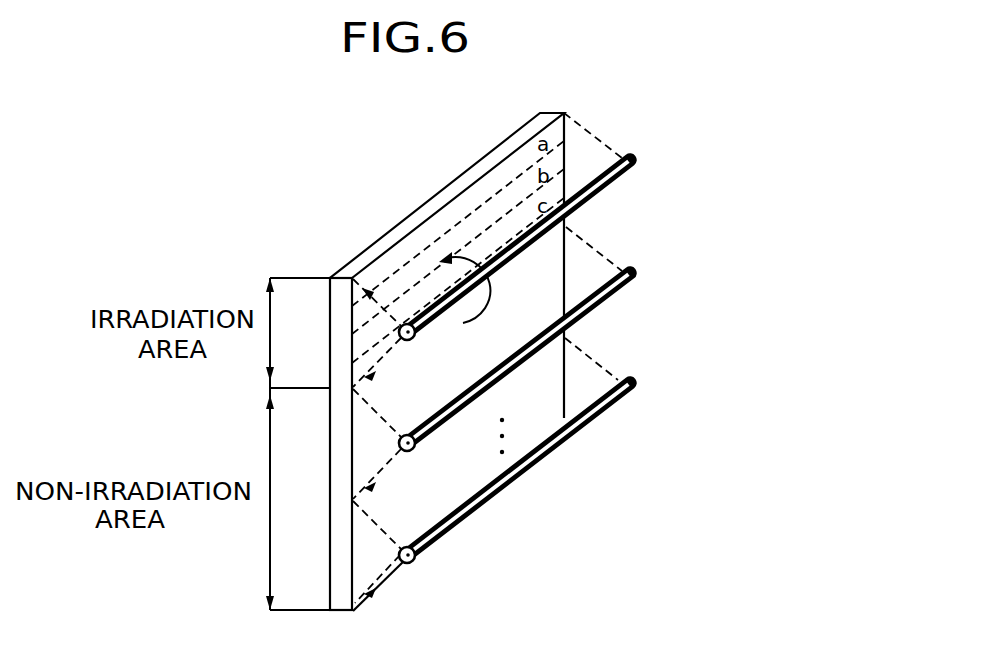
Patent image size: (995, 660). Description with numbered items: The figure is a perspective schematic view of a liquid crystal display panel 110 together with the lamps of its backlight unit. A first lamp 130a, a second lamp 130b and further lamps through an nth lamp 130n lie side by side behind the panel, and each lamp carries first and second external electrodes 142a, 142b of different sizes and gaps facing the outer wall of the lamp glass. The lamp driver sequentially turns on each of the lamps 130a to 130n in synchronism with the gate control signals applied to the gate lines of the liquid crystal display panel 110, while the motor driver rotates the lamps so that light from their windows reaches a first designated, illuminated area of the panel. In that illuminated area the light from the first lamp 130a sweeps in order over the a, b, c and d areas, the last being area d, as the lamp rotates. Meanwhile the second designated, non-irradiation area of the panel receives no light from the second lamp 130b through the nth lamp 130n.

The liquid crystal display panel 110 is at (557, 113).
The first lamp 130a is at (573, 230).
The second lamp 130b is at (632, 273).
The nth lamp 130n is at (632, 384).
The first external electrode 142a is at (630, 157).
The second external electrode 142b is at (629, 174).
The d area d is at (567, 225).